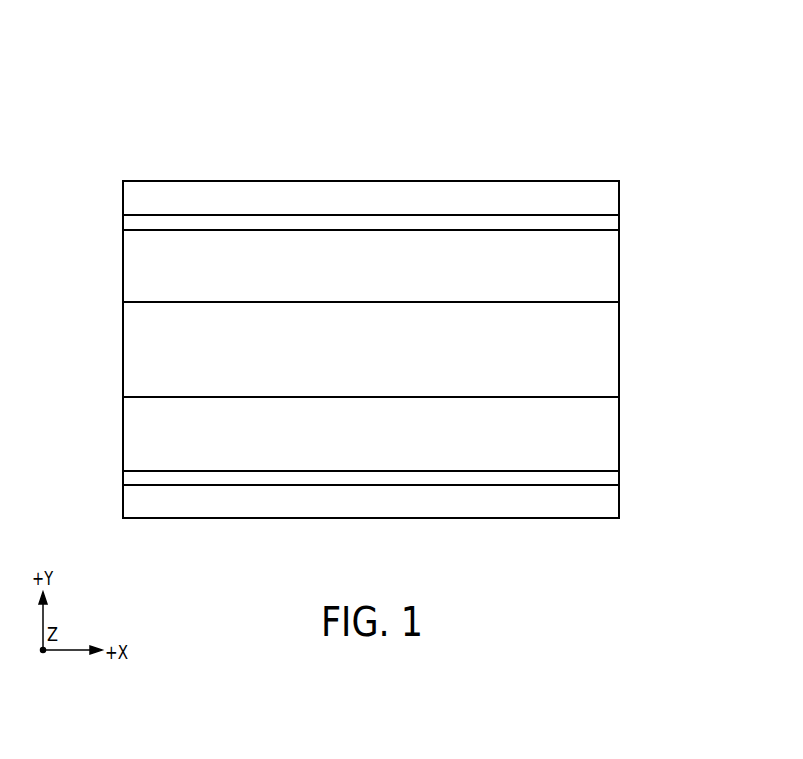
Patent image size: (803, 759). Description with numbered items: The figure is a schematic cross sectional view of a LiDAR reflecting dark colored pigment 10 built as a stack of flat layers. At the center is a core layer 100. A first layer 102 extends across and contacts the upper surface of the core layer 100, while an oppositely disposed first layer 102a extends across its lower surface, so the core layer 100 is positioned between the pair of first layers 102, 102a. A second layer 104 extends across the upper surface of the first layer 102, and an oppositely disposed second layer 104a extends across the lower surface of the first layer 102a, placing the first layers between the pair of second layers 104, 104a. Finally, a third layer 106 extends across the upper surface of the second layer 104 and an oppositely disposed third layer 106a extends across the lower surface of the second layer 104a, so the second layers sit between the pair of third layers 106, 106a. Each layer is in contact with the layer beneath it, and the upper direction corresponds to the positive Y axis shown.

The LiDAR reflecting dark colored pigment 10 is at (598, 110).
The core layer 100 is at (619, 352).
The first layer 102 is at (619, 268).
The second layer 104 is at (619, 222).
The third layer 106 is at (619, 194).
The first layer 102a is at (619, 435).
The second layer 104a is at (619, 480).
The third layer 106a is at (619, 508).